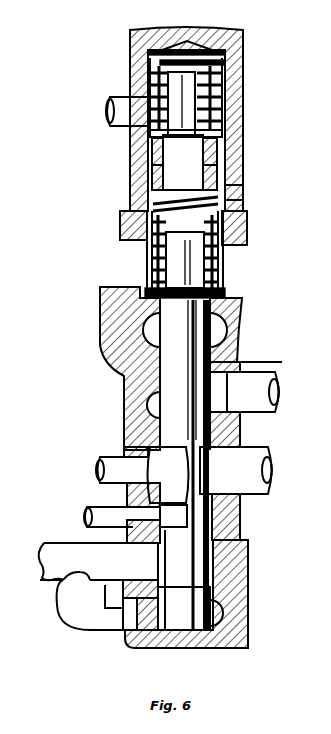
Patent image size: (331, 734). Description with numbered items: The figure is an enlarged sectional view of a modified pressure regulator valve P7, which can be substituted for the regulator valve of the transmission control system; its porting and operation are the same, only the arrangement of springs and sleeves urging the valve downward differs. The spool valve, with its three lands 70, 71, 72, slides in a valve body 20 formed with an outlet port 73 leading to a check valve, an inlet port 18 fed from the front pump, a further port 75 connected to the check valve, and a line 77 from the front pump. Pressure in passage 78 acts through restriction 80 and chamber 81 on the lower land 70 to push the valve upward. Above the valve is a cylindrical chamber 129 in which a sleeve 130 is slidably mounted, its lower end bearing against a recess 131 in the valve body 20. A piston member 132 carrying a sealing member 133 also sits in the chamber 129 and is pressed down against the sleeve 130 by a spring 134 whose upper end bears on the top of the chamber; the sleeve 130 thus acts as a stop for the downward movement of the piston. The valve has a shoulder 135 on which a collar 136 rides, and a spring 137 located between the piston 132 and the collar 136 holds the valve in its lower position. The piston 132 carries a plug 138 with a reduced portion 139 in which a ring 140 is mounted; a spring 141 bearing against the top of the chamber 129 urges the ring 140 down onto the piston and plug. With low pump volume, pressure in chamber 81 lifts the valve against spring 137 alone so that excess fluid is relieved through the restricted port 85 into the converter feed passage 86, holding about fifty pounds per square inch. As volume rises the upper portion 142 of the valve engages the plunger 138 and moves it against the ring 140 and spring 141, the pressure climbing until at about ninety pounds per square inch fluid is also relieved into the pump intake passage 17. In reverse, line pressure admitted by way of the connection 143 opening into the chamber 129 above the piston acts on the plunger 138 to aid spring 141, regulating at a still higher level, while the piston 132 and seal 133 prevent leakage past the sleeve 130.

The cylindrical chamber 129 is at (238, 166).
The piston member 132 is at (232, 148).
The spring 141 is at (162, 50).
The plug 138 is at (212, 77).
The spring 134 is at (226, 97).
The reduced portion 139 is at (183, 131).
The inlet tube 143 is at (130, 115).
The upper portion of the valve 142 is at (148, 145).
The ring 140 is at (148, 160).
The sealing member 133 is at (148, 178).
The sleeve 130 is at (238, 197).
The spring 137 is at (228, 278).
The collar 136 is at (185, 260).
The valve body 20 is at (125, 347).
The recess 131 is at (243, 299).
The shoulder 135 is at (185, 464).
The land 72 is at (228, 365).
The pump intake passage 17 is at (260, 382).
The modified pressure regulator valve P7 is at (116, 411).
The outlet port 73 is at (155, 462).
The line 77 is at (112, 470).
The inlet port 18 is at (258, 458).
The land 71 is at (232, 515).
The restricted port 85 is at (128, 515).
The converter feed passage 86 is at (86, 520).
The port 75 is at (140, 572).
The passage 78 is at (56, 550).
The restriction 80 is at (101, 613).
The land 70 is at (212, 612).
The chamber 81 is at (215, 622).